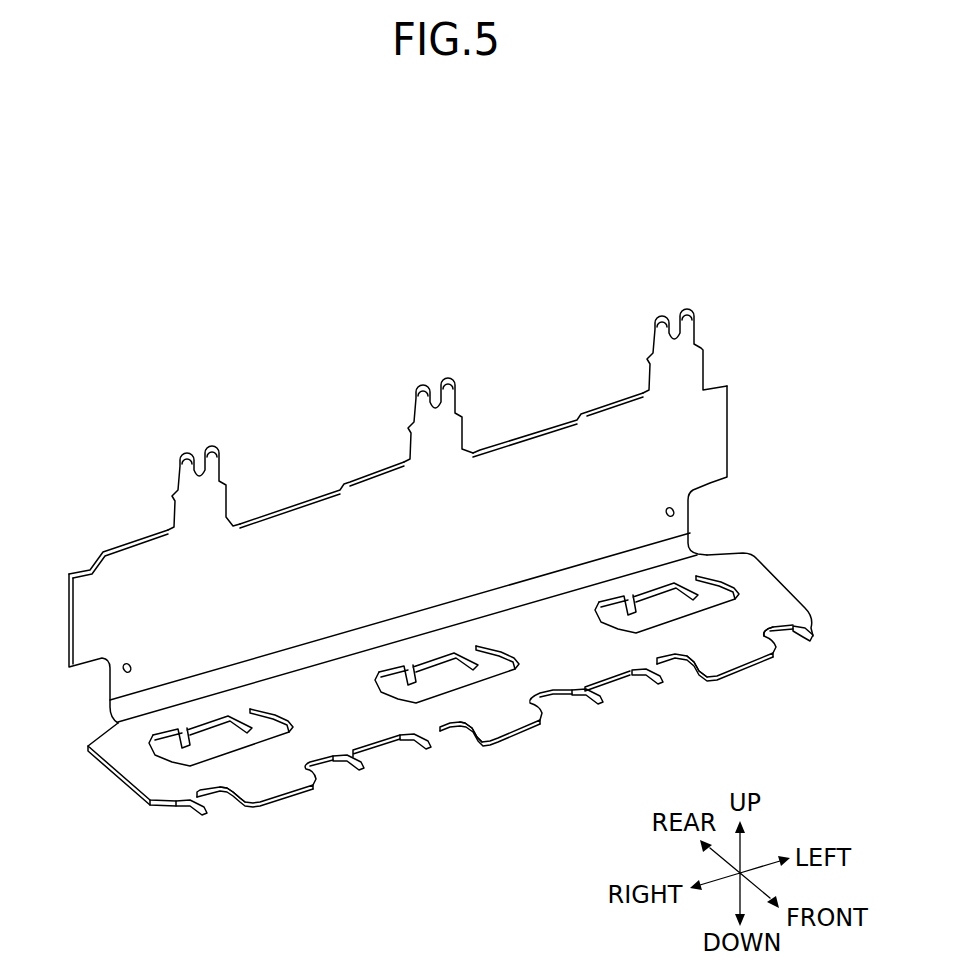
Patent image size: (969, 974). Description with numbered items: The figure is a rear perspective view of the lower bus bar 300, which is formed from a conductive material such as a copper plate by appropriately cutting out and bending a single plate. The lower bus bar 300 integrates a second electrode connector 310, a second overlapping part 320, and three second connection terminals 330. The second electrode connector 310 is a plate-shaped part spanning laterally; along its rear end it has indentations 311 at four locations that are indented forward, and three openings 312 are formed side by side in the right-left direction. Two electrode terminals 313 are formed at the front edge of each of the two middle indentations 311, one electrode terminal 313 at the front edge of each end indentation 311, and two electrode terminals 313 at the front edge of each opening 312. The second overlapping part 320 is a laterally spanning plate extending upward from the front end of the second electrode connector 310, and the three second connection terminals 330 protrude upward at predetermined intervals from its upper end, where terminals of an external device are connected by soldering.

The lower bus bar 300 is at (142, 520).
The second electrode connector 310 is at (773, 587).
The indentations 311 is at (220, 805).
The openings 312 is at (267, 730).
The electrode terminals 313 is at (240, 720).
The second overlapping part 320 is at (698, 457).
The second connection terminals 330 is at (210, 500).